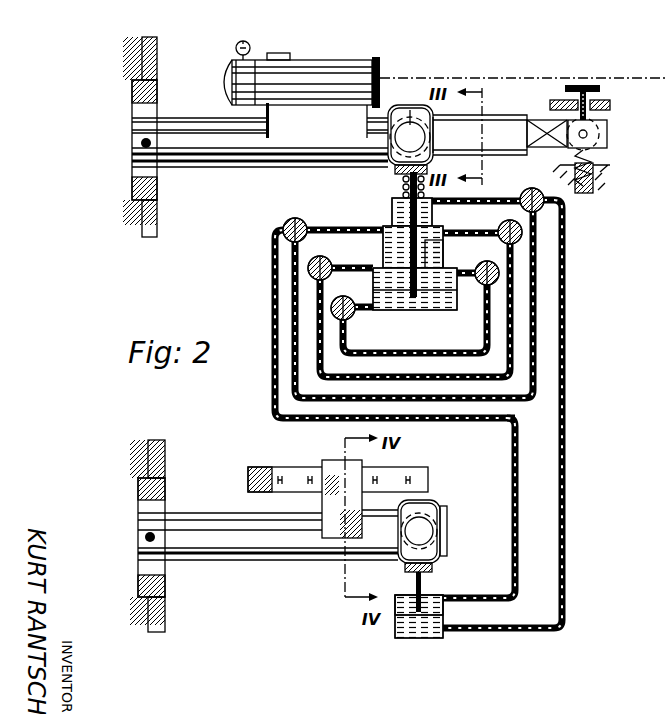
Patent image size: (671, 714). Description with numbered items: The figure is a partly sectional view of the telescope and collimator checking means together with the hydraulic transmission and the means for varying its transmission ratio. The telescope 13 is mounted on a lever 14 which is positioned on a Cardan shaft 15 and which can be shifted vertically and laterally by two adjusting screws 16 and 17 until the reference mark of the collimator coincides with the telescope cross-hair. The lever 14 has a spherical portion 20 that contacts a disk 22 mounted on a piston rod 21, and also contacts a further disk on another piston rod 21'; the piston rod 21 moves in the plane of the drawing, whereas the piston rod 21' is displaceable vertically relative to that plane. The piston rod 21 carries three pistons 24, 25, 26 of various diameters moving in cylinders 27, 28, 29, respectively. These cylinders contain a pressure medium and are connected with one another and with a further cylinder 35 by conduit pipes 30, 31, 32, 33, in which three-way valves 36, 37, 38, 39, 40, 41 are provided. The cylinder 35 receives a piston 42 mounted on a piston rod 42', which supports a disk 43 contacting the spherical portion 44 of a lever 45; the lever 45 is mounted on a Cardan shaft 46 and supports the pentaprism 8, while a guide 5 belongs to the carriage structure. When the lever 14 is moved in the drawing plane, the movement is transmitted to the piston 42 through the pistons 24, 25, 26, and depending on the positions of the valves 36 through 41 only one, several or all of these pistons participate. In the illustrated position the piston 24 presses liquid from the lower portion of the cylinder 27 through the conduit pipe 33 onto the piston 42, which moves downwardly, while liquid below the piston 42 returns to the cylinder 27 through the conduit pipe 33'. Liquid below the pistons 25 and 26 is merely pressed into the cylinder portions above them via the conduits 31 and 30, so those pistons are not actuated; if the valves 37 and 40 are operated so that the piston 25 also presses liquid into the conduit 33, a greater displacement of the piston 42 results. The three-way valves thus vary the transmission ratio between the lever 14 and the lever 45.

The guide rail 5 is at (290, 475).
The pentaprism 8 is at (323, 503).
The telescope 13 is at (329, 70).
The lever 14 is at (193, 148).
The Cardan shaft 15 is at (128, 152).
The adjusting screw 16 is at (588, 85).
The adjusting screw 17 is at (605, 135).
The spherical portion 20 is at (395, 158).
The piston rod 21 is at (438, 234).
The piston rod 21' is at (410, 120).
The disk 22 is at (400, 172).
The piston 24 is at (392, 214).
The piston 25 is at (383, 243).
The piston 26 is at (375, 288).
The cylinder 27 is at (467, 198).
The cylinder 28 is at (443, 258).
The cylinder 29 is at (457, 302).
The conduit pipe 30 is at (397, 352).
The conduit pipe 31 is at (443, 376).
The conduit pipe 32 is at (483, 421).
The conduit pipe 33 is at (395, 346).
The conduit pipe 33' is at (525, 414).
The cylinder 35 is at (418, 638).
The three-way valve 36 is at (287, 220).
The three-way valve 37 is at (312, 274).
The three-way valve 38 is at (350, 310).
The three-way valve 39 is at (556, 213).
The three-way valve 40 is at (520, 241).
The three-way valve 41 is at (498, 283).
The piston 42 is at (437, 596).
The piston rod 42' is at (454, 572).
The disk 43 is at (400, 568).
The spherical portion 44 is at (423, 505).
The lever 45 is at (232, 549).
The Cardan shaft 46 is at (128, 550).